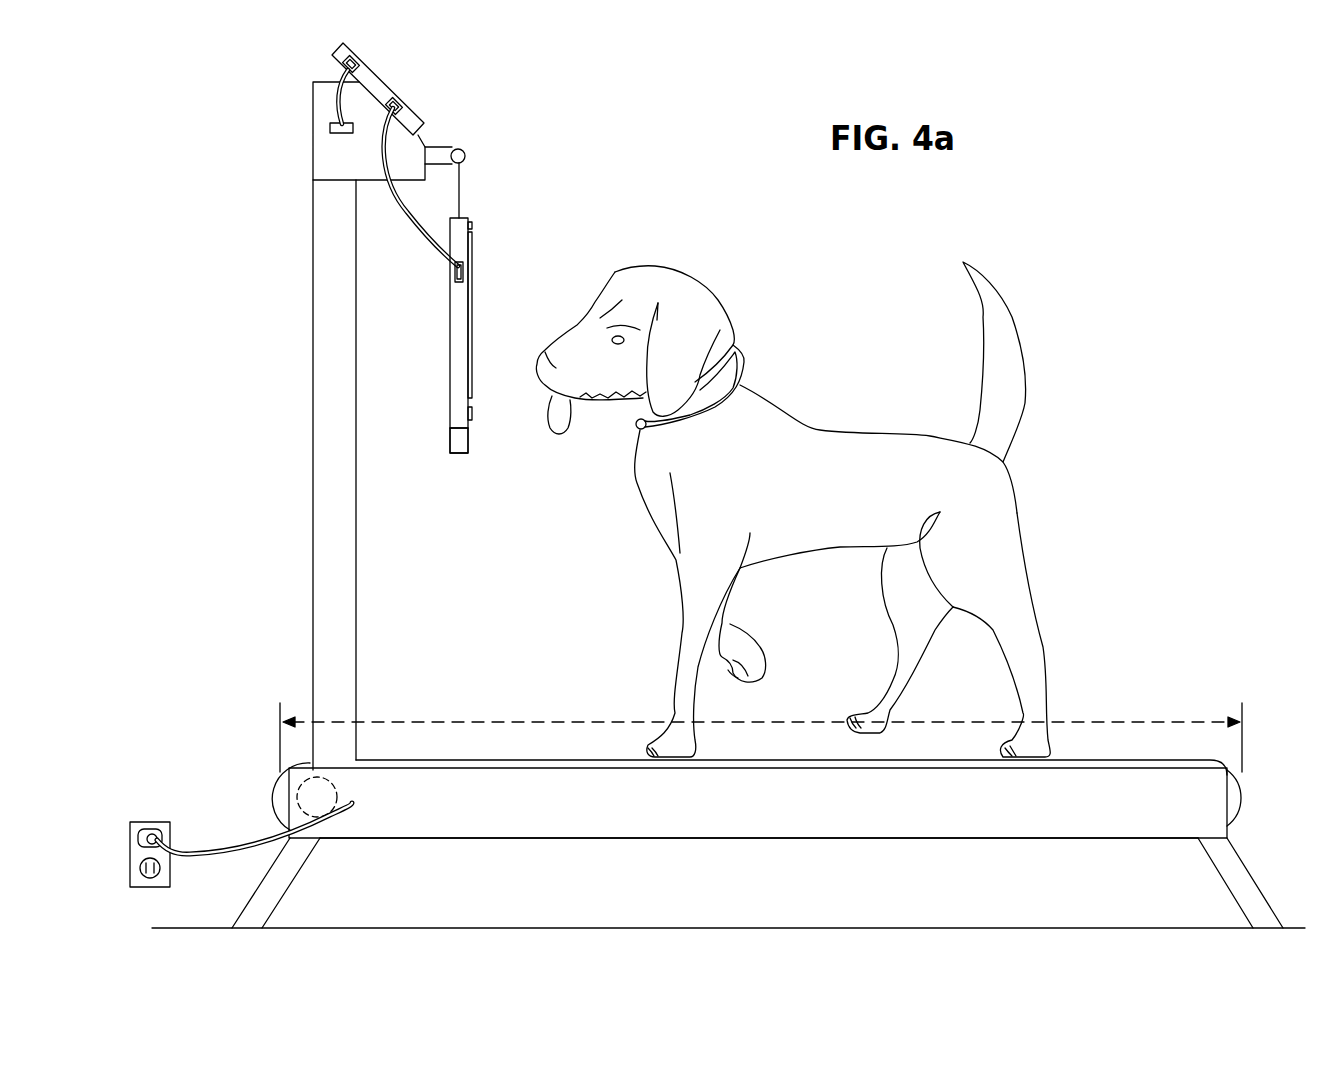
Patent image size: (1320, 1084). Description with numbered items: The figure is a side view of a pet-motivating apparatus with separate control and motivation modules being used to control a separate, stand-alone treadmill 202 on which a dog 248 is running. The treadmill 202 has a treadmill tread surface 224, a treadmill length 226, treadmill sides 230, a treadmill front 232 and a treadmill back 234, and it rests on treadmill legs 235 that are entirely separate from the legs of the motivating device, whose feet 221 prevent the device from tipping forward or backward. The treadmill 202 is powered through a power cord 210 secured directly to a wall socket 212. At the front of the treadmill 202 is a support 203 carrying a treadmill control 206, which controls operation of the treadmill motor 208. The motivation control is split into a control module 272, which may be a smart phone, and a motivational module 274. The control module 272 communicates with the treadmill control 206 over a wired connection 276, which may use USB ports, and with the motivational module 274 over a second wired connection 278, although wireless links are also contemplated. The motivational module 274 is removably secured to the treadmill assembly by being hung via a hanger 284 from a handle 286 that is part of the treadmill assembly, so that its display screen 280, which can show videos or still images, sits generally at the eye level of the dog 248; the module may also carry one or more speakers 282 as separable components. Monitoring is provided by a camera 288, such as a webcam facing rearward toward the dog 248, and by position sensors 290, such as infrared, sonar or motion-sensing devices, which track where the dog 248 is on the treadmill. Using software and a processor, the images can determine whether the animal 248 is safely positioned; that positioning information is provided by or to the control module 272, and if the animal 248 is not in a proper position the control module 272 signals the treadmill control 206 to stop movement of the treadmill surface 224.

The treadmill 202 is at (313, 160).
The support 203 is at (313, 482).
The treadmill control 206 is at (423, 137).
The treadmill motor 208 is at (313, 800).
The power cord 210 is at (293, 847).
The wall socket 212 is at (133, 820).
The feet 221 is at (633, 895).
The treadmill tread surface 224 is at (787, 758).
The treadmill length 226 is at (623, 722).
The treadmill sides 230 is at (570, 768).
The treadmill front 232 is at (280, 790).
The treadmill back 234 is at (1238, 793).
The treadmill legs 235 is at (280, 872).
The dog 248 is at (848, 424).
The control module 272 is at (383, 73).
The motivational module 274 is at (465, 215).
The wired connection 276 is at (337, 97).
The wired connection 278 is at (401, 213).
The display screen 280 is at (475, 325).
The speakers 282 is at (472, 418).
The hanger 284 is at (460, 183).
The handle 286 is at (460, 148).
The camera 288 is at (472, 225).
The position sensors 290 is at (460, 453).